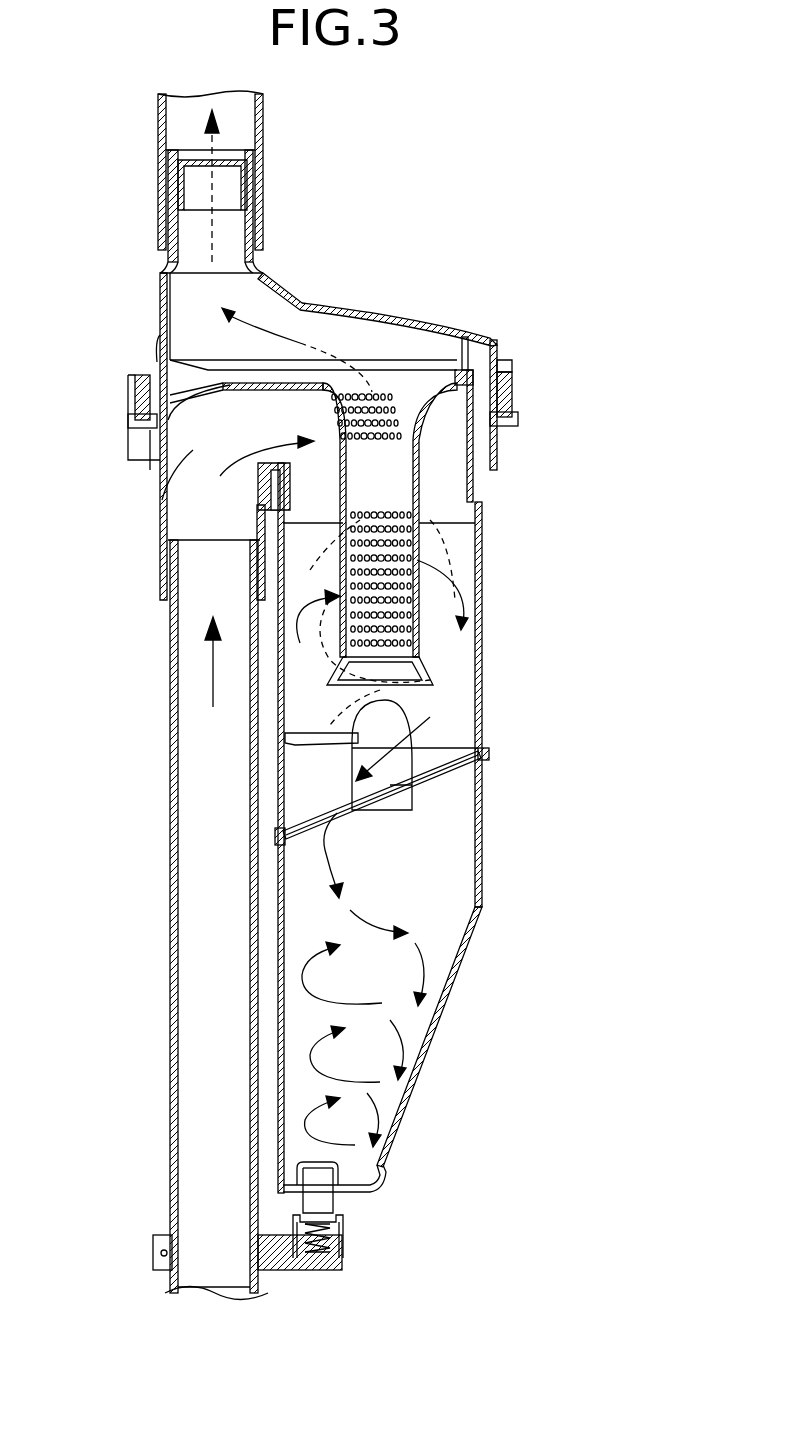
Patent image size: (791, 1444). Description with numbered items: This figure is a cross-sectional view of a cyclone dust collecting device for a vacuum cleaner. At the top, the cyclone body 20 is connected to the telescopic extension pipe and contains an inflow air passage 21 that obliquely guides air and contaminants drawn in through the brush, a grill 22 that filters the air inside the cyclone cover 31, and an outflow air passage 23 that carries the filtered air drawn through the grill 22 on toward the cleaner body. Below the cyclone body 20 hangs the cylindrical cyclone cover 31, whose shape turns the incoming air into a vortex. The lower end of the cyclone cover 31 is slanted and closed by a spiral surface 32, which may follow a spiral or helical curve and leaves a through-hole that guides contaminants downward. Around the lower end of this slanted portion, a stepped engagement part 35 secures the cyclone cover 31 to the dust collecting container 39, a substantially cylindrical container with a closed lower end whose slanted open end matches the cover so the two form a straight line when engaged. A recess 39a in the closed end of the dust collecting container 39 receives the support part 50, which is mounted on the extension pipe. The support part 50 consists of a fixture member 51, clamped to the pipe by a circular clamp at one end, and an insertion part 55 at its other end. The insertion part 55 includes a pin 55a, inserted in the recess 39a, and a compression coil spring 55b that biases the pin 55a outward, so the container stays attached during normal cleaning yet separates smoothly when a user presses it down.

The cyclone body 20 is at (418, 317).
The inflow air passage 21 is at (160, 500).
The grill 22 is at (495, 478).
The outflow air passage 23 is at (230, 235).
The cyclone cover 31 is at (528, 588).
The spiral surface 32 is at (446, 750).
The engagement part 35 is at (277, 833).
The dust collecting container 39 is at (473, 957).
The recess 39a is at (338, 1172).
The support part 50 is at (367, 1260).
The fixture member 51 is at (262, 1247).
The insertion part 55 is at (412, 1226).
The pin 55a is at (325, 1207).
The compression coil spring 55b is at (327, 1235).